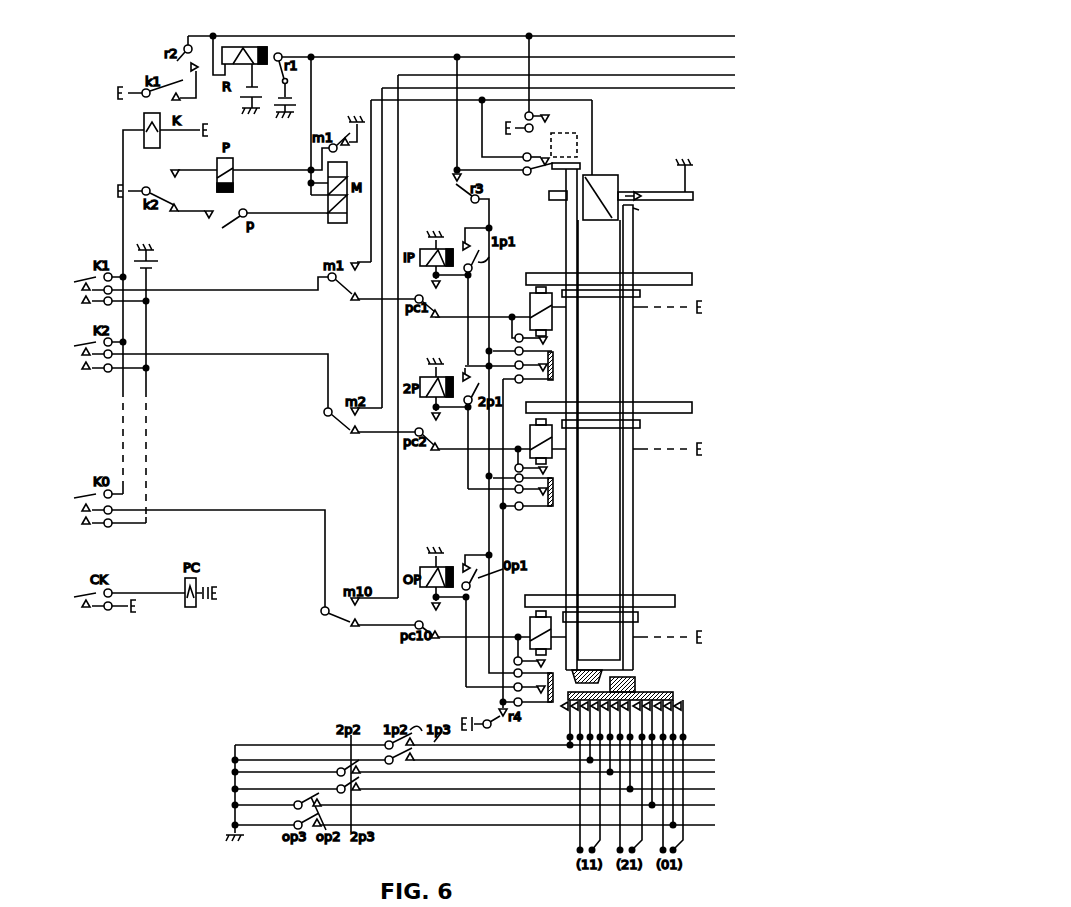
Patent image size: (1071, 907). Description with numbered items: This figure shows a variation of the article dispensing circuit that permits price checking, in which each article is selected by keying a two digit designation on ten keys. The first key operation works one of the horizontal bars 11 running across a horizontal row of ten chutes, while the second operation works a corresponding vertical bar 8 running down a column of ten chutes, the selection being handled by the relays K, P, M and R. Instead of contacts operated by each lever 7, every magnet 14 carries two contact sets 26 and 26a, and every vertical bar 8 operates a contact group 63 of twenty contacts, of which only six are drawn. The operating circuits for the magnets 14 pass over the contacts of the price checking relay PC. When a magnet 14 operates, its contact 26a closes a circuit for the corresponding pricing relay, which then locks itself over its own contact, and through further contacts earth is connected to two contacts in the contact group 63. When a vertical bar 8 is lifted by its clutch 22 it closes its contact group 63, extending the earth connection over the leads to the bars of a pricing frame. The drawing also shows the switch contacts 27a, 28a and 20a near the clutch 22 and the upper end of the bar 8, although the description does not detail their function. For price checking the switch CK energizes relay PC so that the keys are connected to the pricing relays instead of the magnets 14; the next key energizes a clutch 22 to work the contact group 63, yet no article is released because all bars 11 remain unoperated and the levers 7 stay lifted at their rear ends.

The lever 7 is at (641, 293).
The vertical bar 8 is at (655, 188).
The horizontal bar 11 is at (609, 269).
The magnet 14 is at (579, 311).
The clutch 22 is at (600, 188).
The contact set 26 is at (542, 341).
The contact set 26a is at (525, 372).
The switch contact 27a is at (538, 177).
The switch contact 28a is at (541, 123).
The switch contact 20a is at (550, 149).
The contact group 63 is at (637, 683).